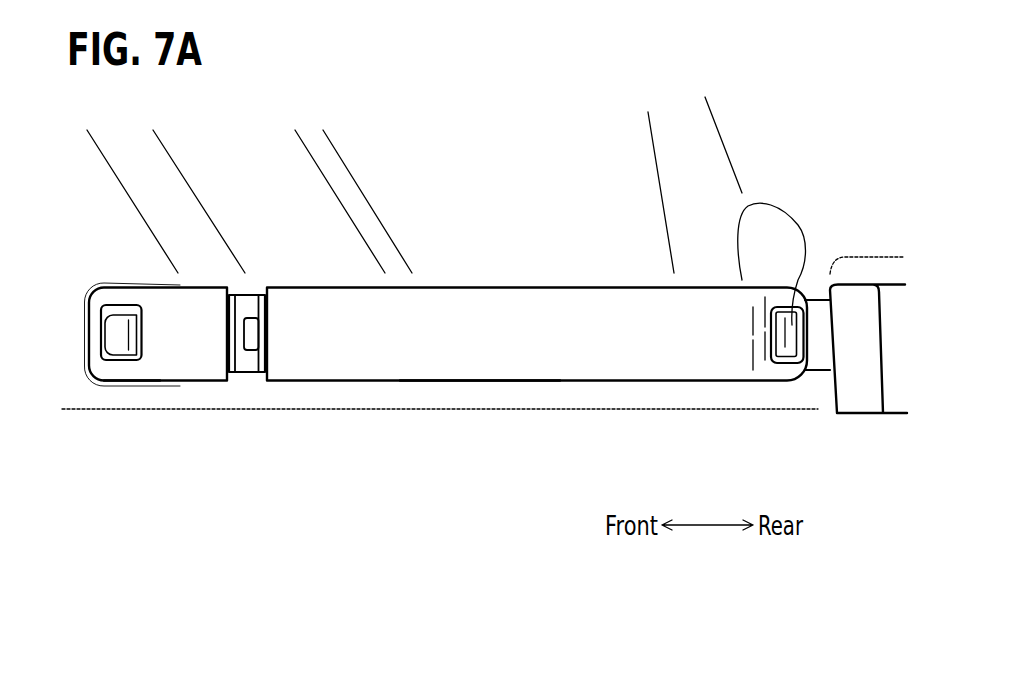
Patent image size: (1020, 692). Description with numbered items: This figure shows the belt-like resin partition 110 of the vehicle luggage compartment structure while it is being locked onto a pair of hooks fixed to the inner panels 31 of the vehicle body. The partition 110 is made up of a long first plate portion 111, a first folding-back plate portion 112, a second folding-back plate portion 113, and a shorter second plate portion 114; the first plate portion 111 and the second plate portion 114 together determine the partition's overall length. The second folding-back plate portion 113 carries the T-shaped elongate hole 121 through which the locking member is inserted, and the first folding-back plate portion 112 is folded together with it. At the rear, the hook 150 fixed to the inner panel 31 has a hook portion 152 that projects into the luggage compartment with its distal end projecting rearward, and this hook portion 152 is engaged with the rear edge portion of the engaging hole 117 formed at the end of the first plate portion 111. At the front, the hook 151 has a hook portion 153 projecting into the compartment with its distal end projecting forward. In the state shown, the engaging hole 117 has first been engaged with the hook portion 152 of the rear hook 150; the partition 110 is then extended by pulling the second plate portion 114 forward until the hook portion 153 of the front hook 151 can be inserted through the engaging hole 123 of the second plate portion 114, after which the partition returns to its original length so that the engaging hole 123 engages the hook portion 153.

The inner panel 31 is at (425, 150).
The partition 110 is at (468, 287).
The first plate portion 111 is at (483, 358).
The first folding-back plate portion 112 is at (263, 358).
The second folding-back plate portion 113 is at (243, 362).
The second plate portion 114 is at (188, 360).
The engaging hole 117 is at (780, 363).
The elongate hole 121 is at (257, 333).
The engaging hole 123 is at (107, 356).
The hook 150 is at (821, 292).
The hook 151 is at (108, 286).
The hook portion 152 is at (803, 282).
The hook portion 153 is at (118, 331).